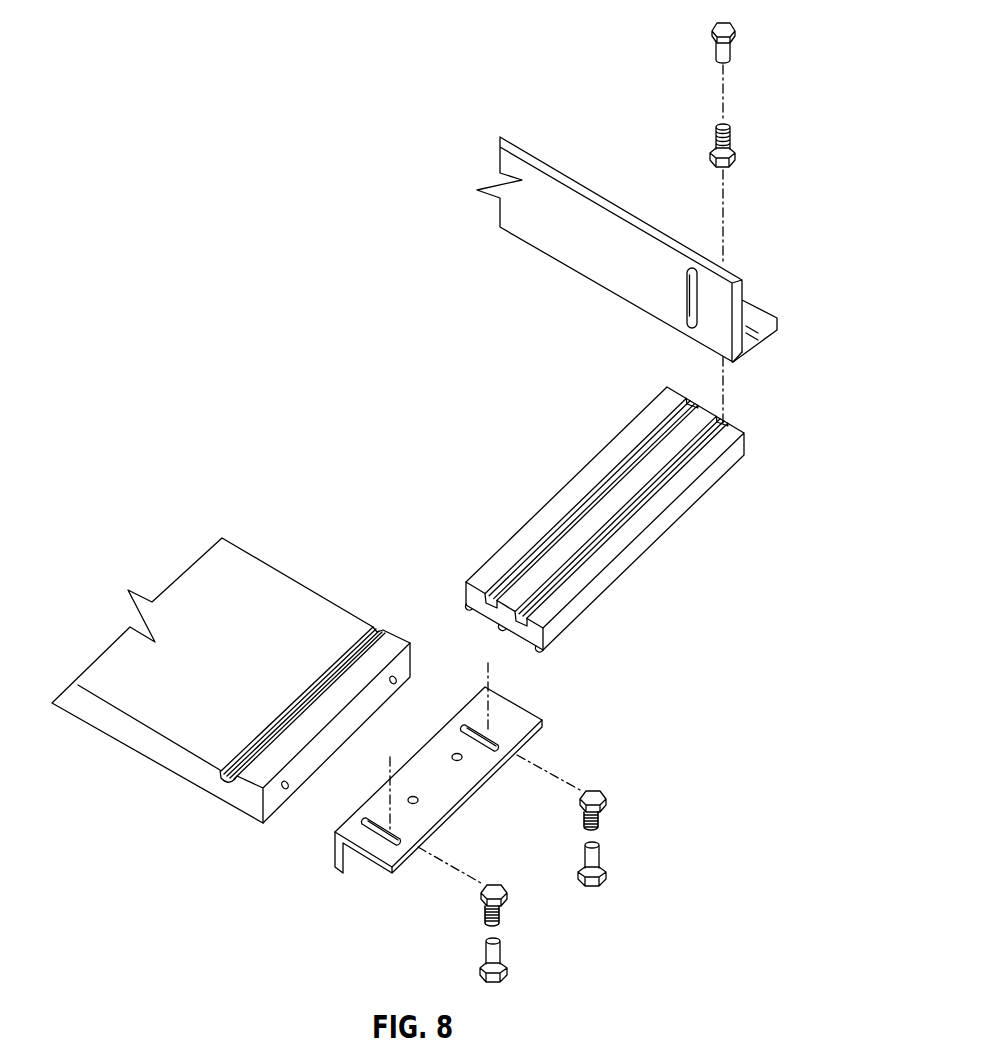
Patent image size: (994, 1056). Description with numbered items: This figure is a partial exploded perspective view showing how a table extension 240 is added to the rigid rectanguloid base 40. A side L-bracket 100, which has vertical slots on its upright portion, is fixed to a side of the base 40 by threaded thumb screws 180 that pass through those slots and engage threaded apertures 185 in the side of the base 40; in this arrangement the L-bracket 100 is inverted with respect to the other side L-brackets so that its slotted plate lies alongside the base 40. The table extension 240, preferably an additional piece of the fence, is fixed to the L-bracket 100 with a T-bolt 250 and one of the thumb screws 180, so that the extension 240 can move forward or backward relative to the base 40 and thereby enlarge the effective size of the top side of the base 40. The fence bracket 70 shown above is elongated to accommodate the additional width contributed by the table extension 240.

The base 40 is at (266, 709).
The fence bracket 70 is at (588, 265).
The side L-bracket 100 is at (373, 863).
The threaded thumb screw 180 is at (733, 137).
The threaded aperture 185 is at (396, 679).
The table extension 240 is at (607, 560).
The T-bolt 250 is at (735, 43).